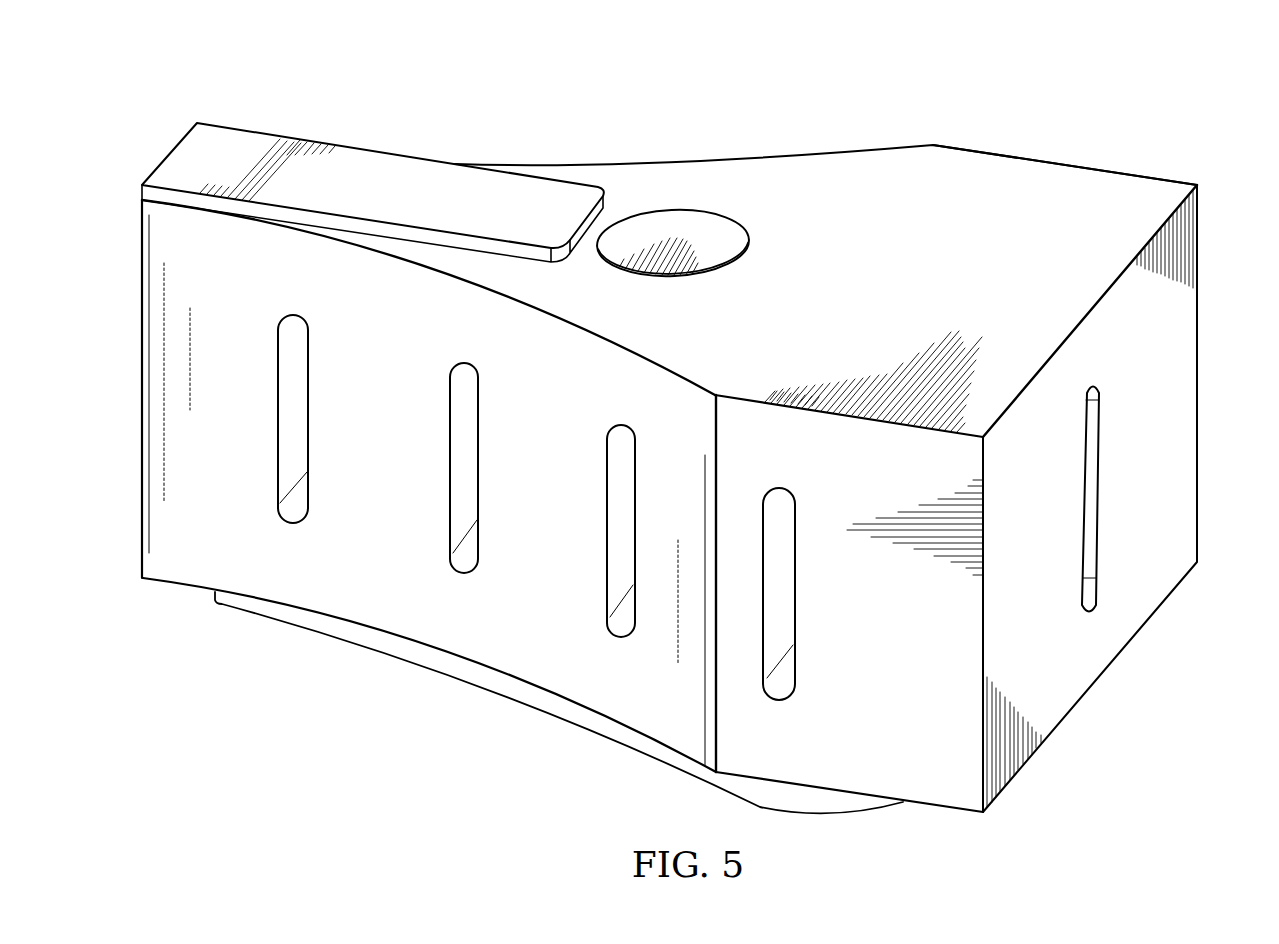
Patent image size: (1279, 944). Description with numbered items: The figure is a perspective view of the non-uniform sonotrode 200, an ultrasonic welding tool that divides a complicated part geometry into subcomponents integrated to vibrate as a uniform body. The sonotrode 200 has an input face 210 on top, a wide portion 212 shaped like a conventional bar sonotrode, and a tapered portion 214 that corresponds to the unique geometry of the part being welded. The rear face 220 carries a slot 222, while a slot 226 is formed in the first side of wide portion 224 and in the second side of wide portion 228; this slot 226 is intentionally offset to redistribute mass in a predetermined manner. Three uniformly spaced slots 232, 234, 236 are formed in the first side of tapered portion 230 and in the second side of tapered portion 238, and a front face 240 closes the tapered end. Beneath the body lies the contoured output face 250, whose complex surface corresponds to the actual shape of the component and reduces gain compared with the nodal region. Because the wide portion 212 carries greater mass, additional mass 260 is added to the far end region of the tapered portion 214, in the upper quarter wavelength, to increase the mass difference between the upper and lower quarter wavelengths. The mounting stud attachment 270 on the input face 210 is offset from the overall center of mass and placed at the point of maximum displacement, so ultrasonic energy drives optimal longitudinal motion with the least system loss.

The non-uniform sonotrode 200 is at (667, 457).
The input face 210 is at (857, 175).
The wide portion 212 is at (1072, 303).
The tapered portion 214 is at (637, 178).
The rear face 220 is at (1188, 373).
The slot 222 is at (1088, 483).
The first side of wide portion 224 is at (1068, 163).
The slot 226 is at (790, 577).
The second side of wide portion 228 is at (952, 798).
The first side of tapered portion 230 is at (750, 160).
The slot 232 is at (618, 509).
The slot 234 is at (460, 449).
The slot 236 is at (290, 402).
The second side of tapered portion 238 is at (443, 633).
The front face 240 is at (141, 383).
The contoured output face 250 is at (546, 708).
The additional mass 260 is at (385, 148).
The mounting stud attachment 270 is at (733, 211).